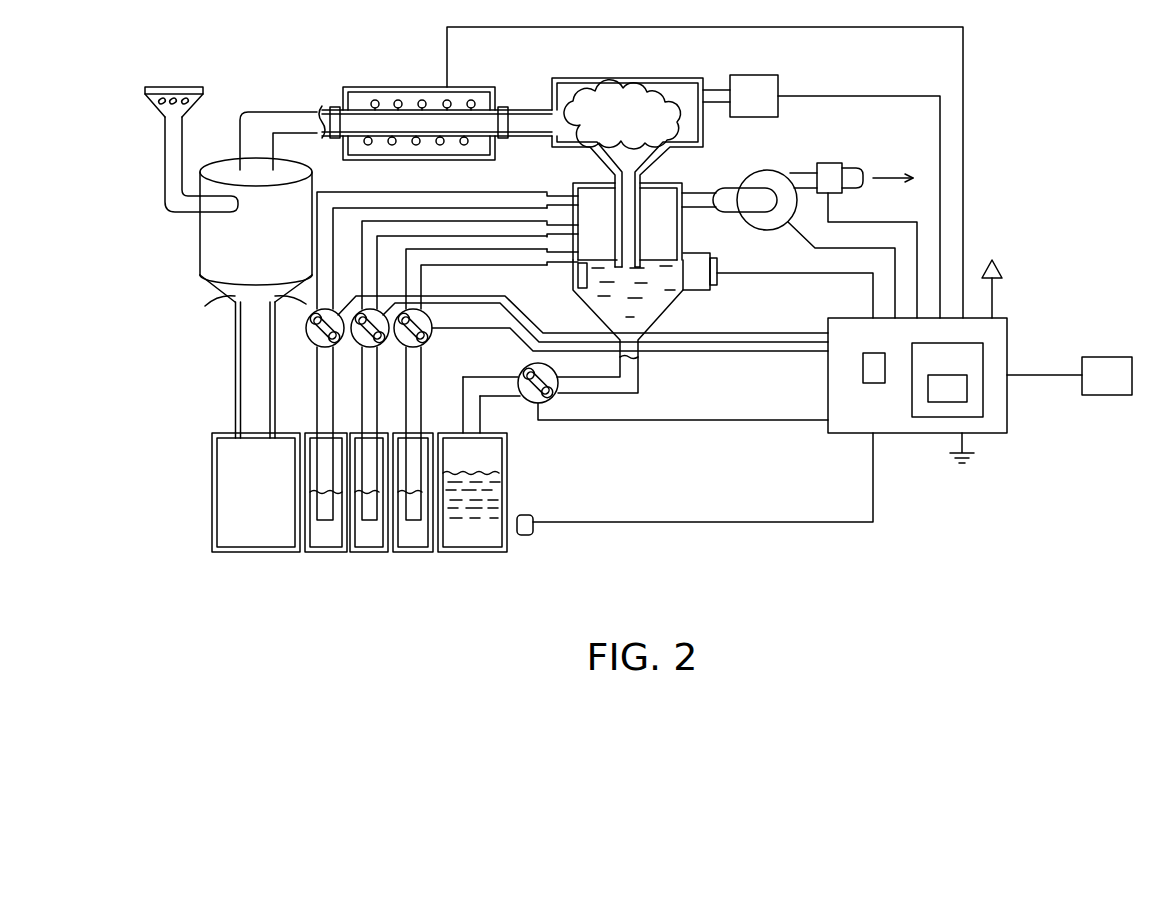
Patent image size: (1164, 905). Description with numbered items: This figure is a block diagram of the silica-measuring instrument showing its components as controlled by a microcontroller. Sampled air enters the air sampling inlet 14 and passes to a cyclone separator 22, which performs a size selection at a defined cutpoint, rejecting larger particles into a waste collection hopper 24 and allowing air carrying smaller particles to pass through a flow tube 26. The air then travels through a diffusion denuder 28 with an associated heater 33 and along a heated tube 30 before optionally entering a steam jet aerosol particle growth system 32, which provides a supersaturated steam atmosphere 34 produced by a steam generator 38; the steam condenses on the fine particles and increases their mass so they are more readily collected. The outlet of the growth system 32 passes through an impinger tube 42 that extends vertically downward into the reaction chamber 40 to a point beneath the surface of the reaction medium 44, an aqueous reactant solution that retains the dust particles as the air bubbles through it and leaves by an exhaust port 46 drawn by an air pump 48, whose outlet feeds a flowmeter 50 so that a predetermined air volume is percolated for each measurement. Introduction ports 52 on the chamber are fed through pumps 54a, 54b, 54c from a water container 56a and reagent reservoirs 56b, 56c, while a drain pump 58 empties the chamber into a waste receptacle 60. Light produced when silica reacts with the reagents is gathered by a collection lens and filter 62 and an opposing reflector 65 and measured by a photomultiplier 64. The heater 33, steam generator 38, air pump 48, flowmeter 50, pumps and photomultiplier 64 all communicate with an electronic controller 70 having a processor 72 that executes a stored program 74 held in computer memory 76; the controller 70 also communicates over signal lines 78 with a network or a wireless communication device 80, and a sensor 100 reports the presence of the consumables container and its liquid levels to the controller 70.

The air sampling inlet 14 is at (206, 90).
The cyclone separator 22 is at (300, 194).
The waste collection hopper 24 is at (268, 514).
The flow tube 26 is at (263, 118).
The diffusion denuder 28 is at (380, 90).
The heated tube 30 is at (479, 102).
The heater 33 is at (403, 100).
The steam jet aerosol particle growth system 32 is at (615, 78).
The supersaturated steam atmosphere 34 is at (662, 90).
The steam generator 38 is at (765, 82).
The reaction chamber 40 is at (565, 174).
The impinger tube 42 is at (640, 238).
The reaction medium 44 is at (660, 288).
The exhaust port 46 is at (730, 185).
The air pump 48 is at (748, 170).
The flowmeter 50 is at (832, 166).
The introduction ports 52 is at (572, 257).
The pump 54a is at (310, 338).
The pump 54b is at (390, 346).
The pump 54c is at (428, 340).
The water container 56a is at (326, 535).
The reagent reservoir 56b is at (370, 535).
The reagent reservoir 56c is at (414, 535).
The drain pump 58 is at (553, 398).
The waste receptacle 60 is at (470, 535).
The collection lens and filter 62 is at (703, 289).
The photomultiplier 64 is at (713, 258).
The reflector 65 is at (577, 277).
The electronic controller 70 is at (1010, 420).
The processor 72 is at (863, 368).
The stored program 74 is at (928, 385).
The computer memory 76 is at (983, 362).
The signal lines 78 is at (1055, 372).
The wireless communication device 80 is at (1133, 375).
The sensor 100 is at (540, 516).